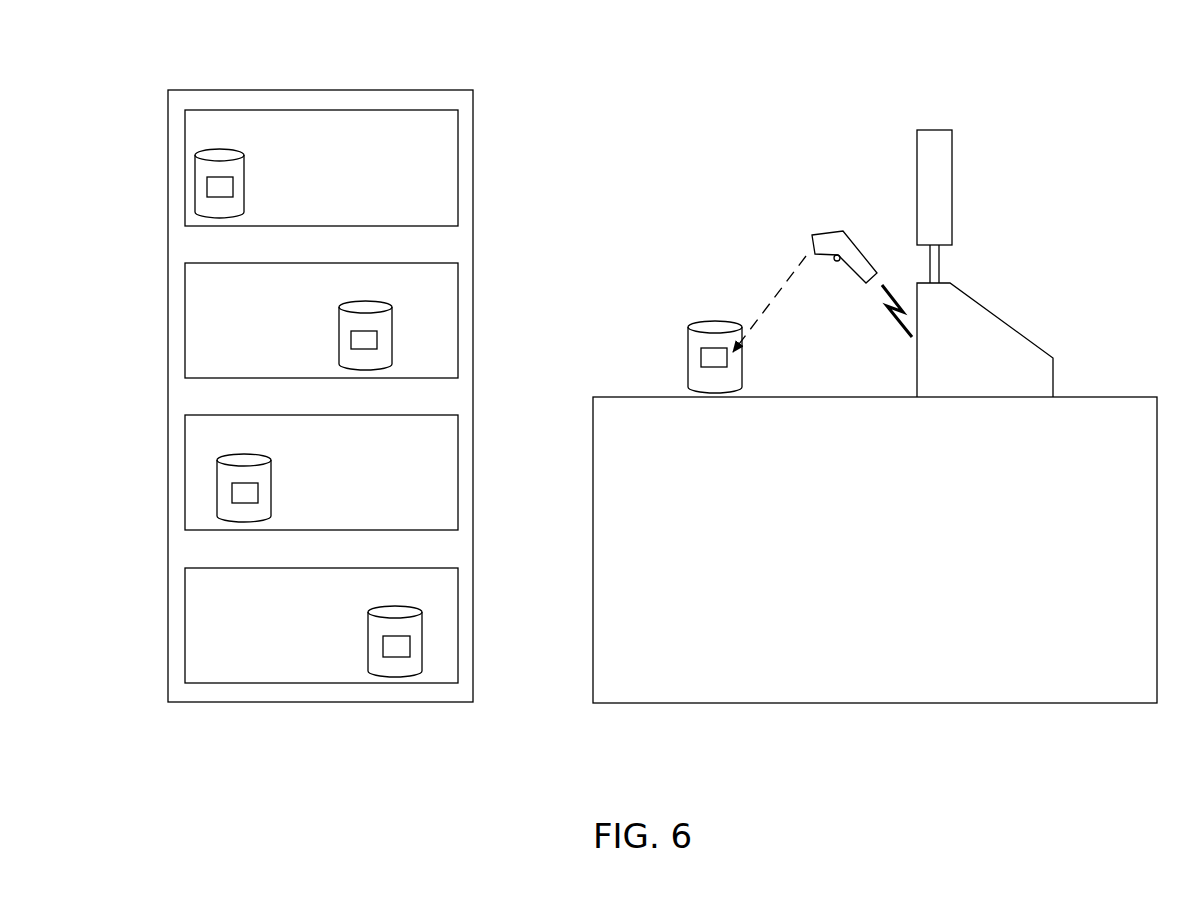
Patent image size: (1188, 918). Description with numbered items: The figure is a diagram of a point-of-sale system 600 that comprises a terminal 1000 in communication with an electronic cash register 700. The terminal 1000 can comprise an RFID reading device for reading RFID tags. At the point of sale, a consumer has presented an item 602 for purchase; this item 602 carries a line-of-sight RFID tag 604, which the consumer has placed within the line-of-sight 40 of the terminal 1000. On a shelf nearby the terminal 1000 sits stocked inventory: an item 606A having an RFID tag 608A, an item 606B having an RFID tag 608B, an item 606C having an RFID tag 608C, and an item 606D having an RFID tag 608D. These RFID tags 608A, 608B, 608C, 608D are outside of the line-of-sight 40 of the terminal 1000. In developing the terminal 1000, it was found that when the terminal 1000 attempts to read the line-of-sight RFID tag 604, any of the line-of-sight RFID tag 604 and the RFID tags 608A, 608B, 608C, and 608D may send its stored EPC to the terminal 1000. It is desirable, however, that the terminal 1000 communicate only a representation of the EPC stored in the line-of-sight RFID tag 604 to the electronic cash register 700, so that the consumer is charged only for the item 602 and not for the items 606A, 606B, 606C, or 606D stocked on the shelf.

The point-of-sale system 600 is at (697, 63).
The item 602 is at (714, 313).
The line-of-sight RFID tag 604 is at (730, 362).
The item 606A is at (192, 150).
The item 606B is at (392, 305).
The item 606C is at (207, 470).
The item 606D is at (370, 612).
The RFID tag 608A is at (205, 183).
The RFID tag 608B is at (380, 338).
The RFID tag 608C is at (230, 488).
The RFID tag 608D is at (383, 643).
The line-of-sight 40 is at (769, 304).
The electronic cash register 700 is at (1016, 312).
The terminal 1000 is at (828, 222).